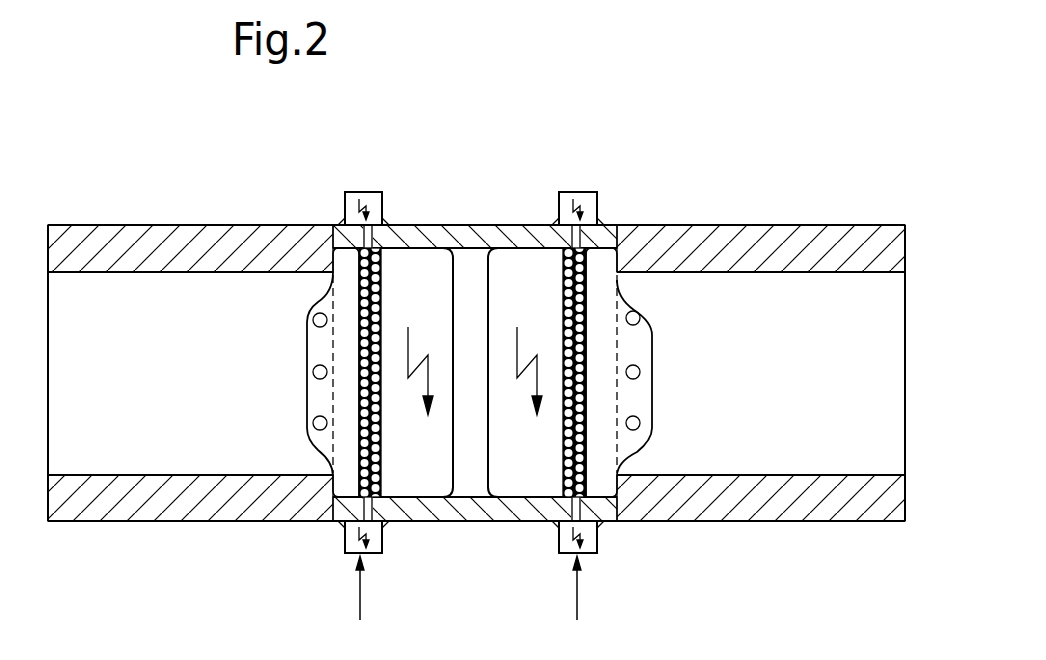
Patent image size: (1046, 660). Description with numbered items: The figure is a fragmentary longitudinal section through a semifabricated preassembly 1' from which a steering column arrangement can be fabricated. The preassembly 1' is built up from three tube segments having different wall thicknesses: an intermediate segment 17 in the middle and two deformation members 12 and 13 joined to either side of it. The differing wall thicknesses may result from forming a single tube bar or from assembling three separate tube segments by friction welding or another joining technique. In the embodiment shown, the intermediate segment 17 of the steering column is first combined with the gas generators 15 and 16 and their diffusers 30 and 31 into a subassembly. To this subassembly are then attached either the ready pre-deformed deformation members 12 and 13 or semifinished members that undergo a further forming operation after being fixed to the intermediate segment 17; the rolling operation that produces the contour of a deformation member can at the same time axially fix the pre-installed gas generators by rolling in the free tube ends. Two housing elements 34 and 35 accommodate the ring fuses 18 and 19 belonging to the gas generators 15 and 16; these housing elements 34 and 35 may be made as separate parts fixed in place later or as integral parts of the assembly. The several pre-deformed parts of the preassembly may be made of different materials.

The semifabricated preassembly 1' is at (767, 187).
The deformation member 12 is at (778, 496).
The deformation member 13 is at (159, 510).
The gas generator 15 is at (433, 275).
The gas generator 16 is at (509, 270).
The intermediate segment 17 is at (475, 225).
The ring fuse 18 is at (589, 228).
The ring fuse 19 is at (380, 268).
The diffuser 30 is at (341, 292).
The diffuser 31 is at (623, 305).
The housing element 34 is at (375, 553).
The housing element 35 is at (590, 553).